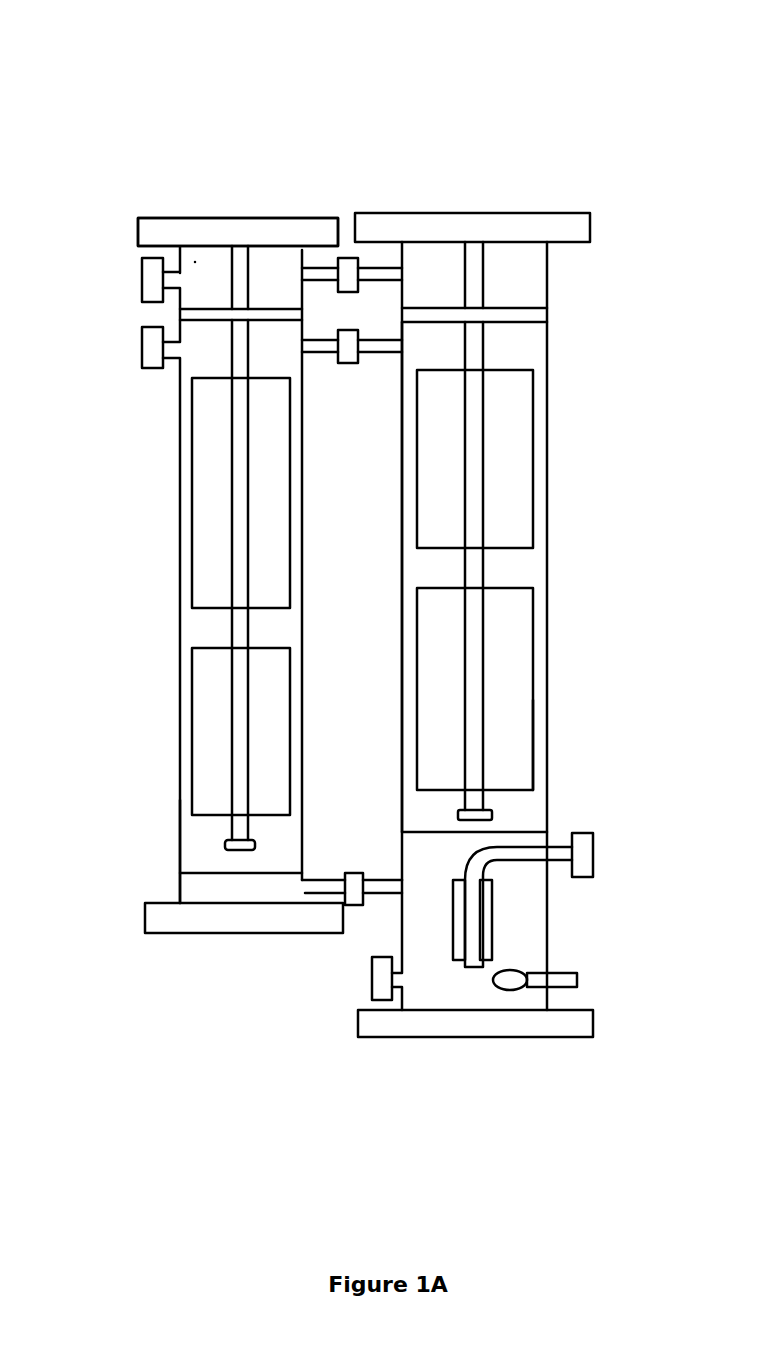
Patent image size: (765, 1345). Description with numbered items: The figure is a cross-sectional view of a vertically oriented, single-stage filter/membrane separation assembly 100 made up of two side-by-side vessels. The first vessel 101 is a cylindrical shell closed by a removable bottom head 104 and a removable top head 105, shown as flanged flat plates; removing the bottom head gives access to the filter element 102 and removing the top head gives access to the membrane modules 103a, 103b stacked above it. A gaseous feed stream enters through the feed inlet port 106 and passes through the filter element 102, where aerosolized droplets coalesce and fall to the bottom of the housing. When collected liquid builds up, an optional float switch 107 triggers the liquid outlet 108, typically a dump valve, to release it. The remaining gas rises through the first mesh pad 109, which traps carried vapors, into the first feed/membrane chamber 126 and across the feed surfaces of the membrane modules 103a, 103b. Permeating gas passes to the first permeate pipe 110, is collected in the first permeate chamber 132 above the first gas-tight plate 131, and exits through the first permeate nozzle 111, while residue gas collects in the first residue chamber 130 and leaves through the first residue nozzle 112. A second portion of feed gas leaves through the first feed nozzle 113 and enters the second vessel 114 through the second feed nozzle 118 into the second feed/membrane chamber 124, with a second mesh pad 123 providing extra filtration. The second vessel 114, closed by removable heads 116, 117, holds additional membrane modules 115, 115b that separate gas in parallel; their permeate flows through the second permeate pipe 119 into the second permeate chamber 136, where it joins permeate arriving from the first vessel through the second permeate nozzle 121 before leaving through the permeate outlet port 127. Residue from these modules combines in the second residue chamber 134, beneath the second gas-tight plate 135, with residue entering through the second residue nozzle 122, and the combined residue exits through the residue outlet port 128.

The assembly 100 is at (368, 40).
The first vessel 101 is at (547, 398).
The filter element 102 is at (490, 893).
The membrane module 103a is at (527, 602).
The membrane module 103b is at (523, 445).
The removable bottom head 104 is at (593, 1030).
The removable top head 105 is at (590, 215).
The feed inlet port 106 is at (593, 858).
The float switch 107 is at (577, 980).
The liquid outlet 108 is at (370, 960).
The first mesh pad 109 is at (547, 832).
The first permeate pipe 110 is at (475, 498).
The first permeate nozzle 111 is at (378, 287).
The first residue nozzle 112 is at (378, 358).
The first feed nozzle 113 is at (366, 879).
The second vessel 114 is at (180, 630).
The membrane module 115 is at (202, 732).
The membrane module 115b is at (202, 467).
The removable head 116 is at (145, 930).
The removable head 117 is at (138, 220).
The second feed nozzle 118 is at (311, 878).
The second permeate pipe 119 is at (238, 518).
The second permeate nozzle 121 is at (320, 287).
The second residue nozzle 122 is at (320, 358).
The second mesh pad 123 is at (183, 873).
The second feed/membrane chamber 124 is at (188, 827).
The first feed/membrane chamber 126 is at (533, 798).
The permeate outlet port 127 is at (142, 268).
The residue outlet port 128 is at (140, 356).
The first residue chamber 130 is at (527, 352).
The first gas-tight plate 131 is at (535, 316).
The first permeate chamber 132 is at (528, 285).
The second residue chamber 134 is at (198, 355).
The second gas-tight plate 135 is at (178, 312).
The second permeate chamber 136 is at (195, 262).